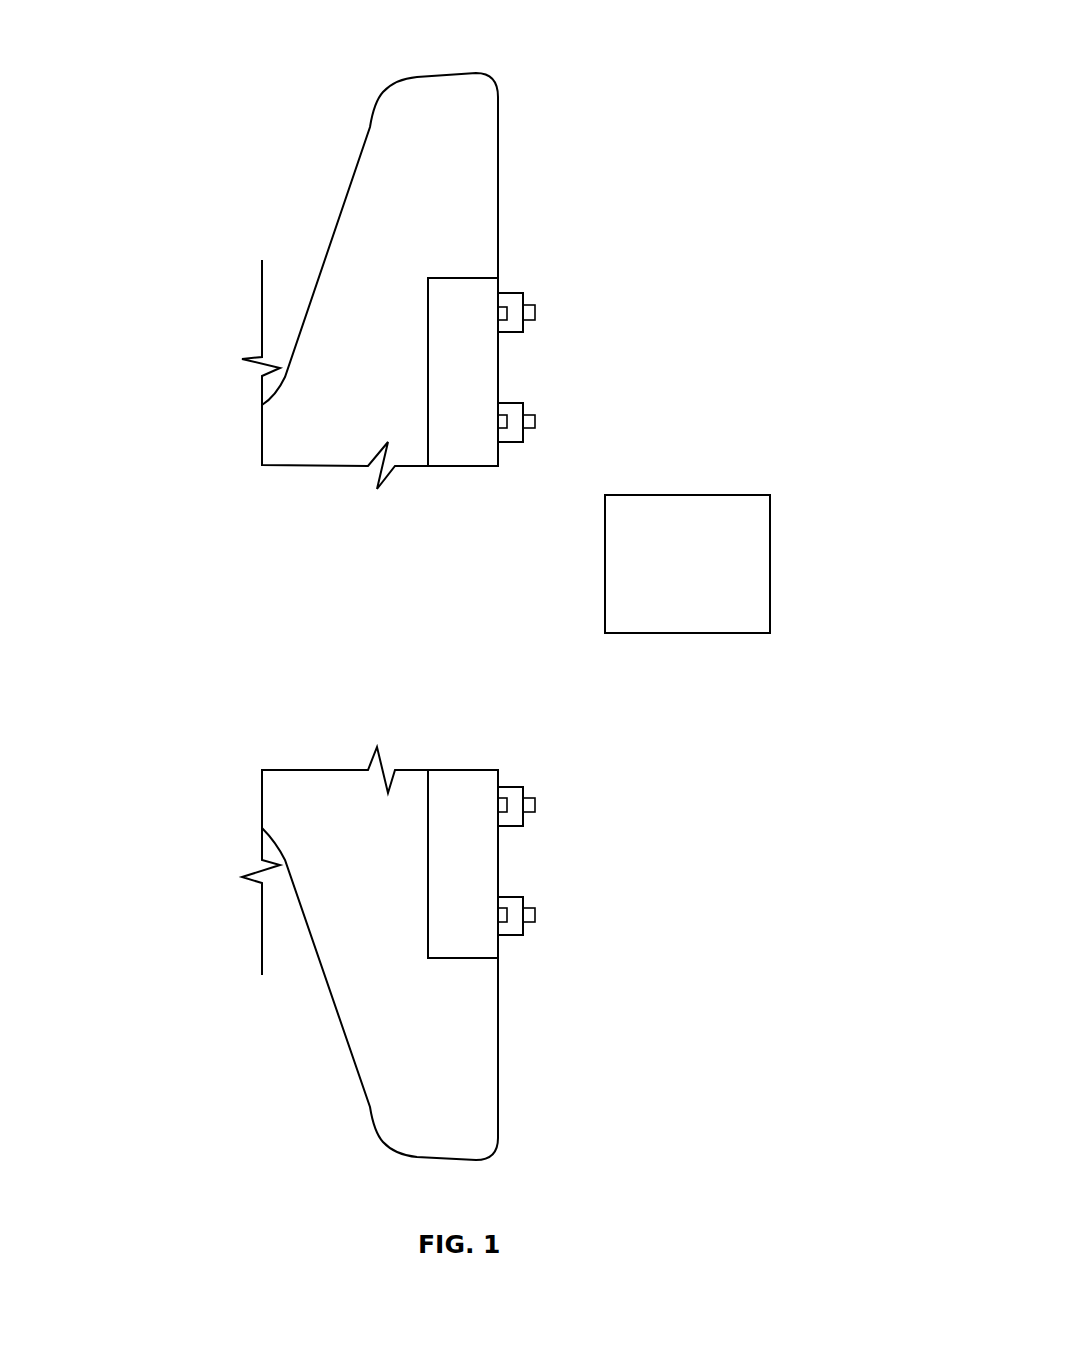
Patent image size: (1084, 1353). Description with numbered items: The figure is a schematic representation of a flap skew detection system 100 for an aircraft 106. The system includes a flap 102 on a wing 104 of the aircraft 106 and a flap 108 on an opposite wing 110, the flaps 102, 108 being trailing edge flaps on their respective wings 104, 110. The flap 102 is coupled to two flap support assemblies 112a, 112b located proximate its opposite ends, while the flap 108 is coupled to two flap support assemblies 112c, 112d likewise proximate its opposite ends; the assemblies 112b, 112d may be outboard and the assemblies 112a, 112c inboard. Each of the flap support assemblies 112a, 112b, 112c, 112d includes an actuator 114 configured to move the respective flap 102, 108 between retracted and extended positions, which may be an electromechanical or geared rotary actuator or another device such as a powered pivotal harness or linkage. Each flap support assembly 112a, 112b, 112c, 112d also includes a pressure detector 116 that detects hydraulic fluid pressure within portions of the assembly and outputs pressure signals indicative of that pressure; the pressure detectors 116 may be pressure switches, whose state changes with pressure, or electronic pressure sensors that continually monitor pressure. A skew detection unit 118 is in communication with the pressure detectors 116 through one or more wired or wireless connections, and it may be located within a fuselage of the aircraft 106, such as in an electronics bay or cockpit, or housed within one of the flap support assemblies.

The flap skew detection system 100 is at (528, 41).
The flap 102 is at (463, 278).
The wing 104 is at (482, 147).
The aircraft 106 is at (298, 150).
The flap 108 is at (463, 780).
The opposite wing 110 is at (488, 1093).
The flap support assembly 112a is at (523, 407).
The flap support assembly 112b is at (523, 293).
The flap support assembly 112c is at (523, 787).
The flap support assembly 112d is at (523, 897).
The actuator 114 is at (505, 322).
The pressure detector 116 is at (535, 312).
The skew detection unit 118 is at (688, 495).